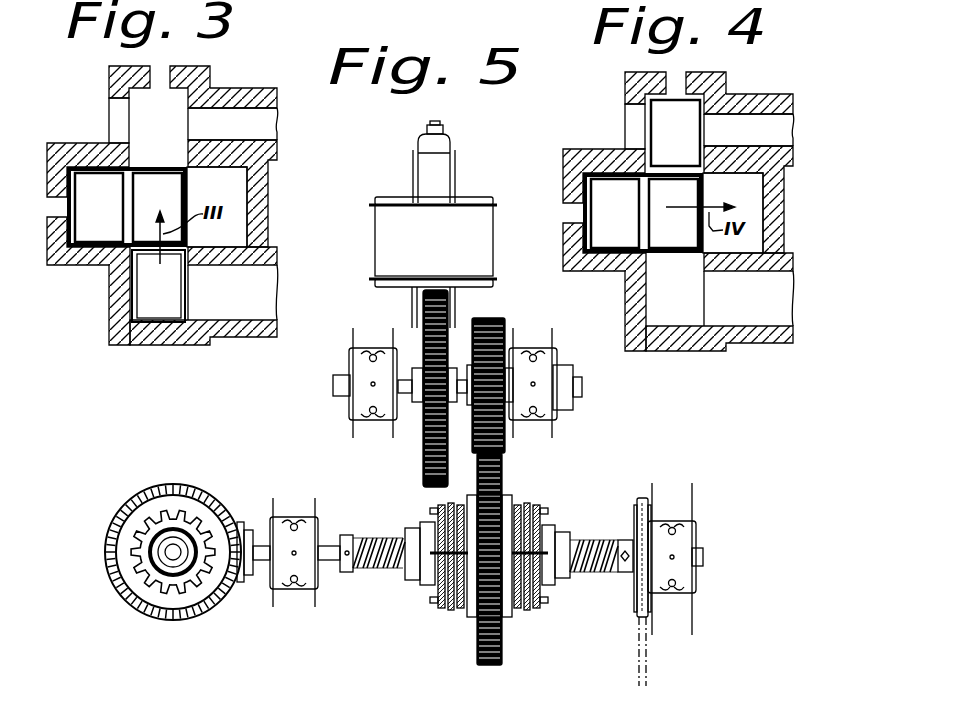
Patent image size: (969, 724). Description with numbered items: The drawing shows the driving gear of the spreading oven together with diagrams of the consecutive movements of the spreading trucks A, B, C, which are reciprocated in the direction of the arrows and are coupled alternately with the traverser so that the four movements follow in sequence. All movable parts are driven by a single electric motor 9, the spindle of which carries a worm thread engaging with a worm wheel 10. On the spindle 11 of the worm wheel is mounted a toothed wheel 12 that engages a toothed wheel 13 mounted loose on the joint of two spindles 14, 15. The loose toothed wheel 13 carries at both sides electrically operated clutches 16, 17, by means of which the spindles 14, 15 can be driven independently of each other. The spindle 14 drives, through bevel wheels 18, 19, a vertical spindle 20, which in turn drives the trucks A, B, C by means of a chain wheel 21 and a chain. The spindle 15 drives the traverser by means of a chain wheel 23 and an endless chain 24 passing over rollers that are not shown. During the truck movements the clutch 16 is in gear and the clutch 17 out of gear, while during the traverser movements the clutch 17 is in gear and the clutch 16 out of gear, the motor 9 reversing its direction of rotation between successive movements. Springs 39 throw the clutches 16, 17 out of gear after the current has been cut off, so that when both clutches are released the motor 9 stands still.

In FIG. 3, the truck A is at (99, 207).
In FIG. 4, the truck A is at (615, 213).
In FIG. 3, the truck B is at (158, 286).
In FIG. 4, the truck B is at (673, 214).
In FIG. 3, the truck C is at (157, 207).
In FIG. 4, the truck C is at (675, 133).
In FIG. 5, the electric motor 9 is at (403, 236).
In FIG. 5, the worm wheel 10 is at (423, 463).
In FIG. 5, the spindle 11 is at (463, 392).
In FIG. 5, the toothed wheel 12 is at (492, 318).
In FIG. 5, the toothed wheel 13 is at (502, 478).
In FIG. 5, the spindle 14 is at (392, 538).
In FIG. 5, the spindle 15 is at (600, 542).
In FIG. 5, the electrically operated clutch 16 is at (450, 610).
In FIG. 5, the electrically operated clutch 17 is at (528, 610).
In FIG. 5, the bevel wheel 18 is at (238, 521).
In FIG. 5, the bevel wheel 19 is at (188, 485).
In FIG. 5, the vertical spindle 20 is at (173, 552).
In FIG. 5, the chain wheel 21 is at (198, 578).
In FIG. 5, the chain wheel 23 is at (639, 508).
In FIG. 5, the endless chain 24 is at (647, 659).
In FIG. 5, the spring 39 is at (397, 572).